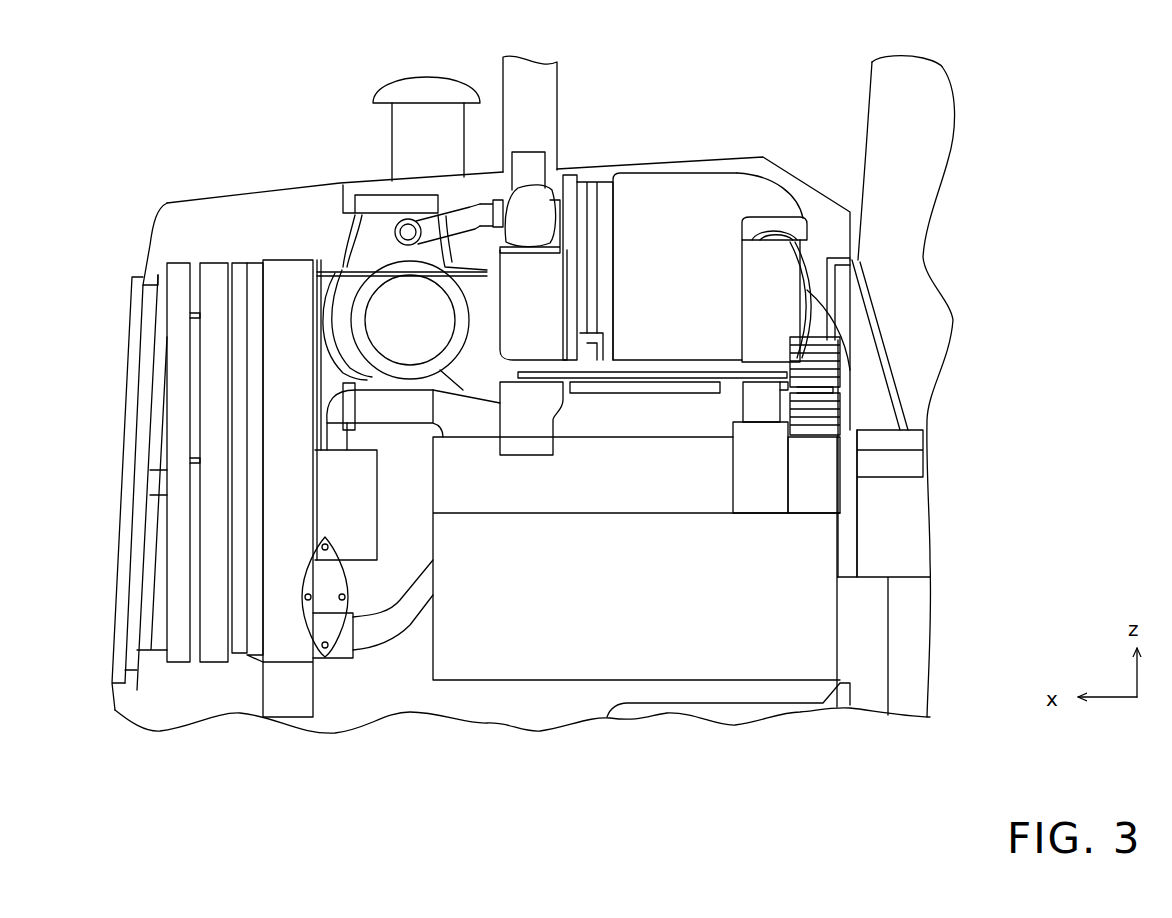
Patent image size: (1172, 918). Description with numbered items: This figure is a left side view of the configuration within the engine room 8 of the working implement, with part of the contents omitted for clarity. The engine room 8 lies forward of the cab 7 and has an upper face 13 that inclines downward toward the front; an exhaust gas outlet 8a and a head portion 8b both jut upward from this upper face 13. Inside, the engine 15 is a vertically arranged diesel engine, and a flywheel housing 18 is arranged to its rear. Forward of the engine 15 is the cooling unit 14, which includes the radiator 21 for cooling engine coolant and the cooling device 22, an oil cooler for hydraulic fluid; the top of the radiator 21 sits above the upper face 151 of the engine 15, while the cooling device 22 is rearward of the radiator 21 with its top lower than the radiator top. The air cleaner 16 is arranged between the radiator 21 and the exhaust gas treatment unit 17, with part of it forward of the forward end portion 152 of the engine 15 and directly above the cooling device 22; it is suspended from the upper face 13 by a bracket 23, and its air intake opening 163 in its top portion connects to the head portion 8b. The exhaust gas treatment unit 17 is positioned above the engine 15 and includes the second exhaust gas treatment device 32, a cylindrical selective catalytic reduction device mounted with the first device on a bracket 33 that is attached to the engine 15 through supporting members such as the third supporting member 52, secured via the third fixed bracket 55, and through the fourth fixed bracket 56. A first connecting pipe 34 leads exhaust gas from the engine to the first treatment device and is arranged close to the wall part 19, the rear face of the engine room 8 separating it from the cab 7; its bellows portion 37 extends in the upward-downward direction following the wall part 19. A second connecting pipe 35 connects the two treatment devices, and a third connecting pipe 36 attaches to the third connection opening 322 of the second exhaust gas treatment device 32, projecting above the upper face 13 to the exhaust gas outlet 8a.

The cab 7 is at (932, 130).
The engine room 8 is at (705, 130).
The exhaust gas outlet 8a is at (557, 93).
The head portion 8b is at (390, 135).
The upper face 13 is at (665, 157).
The cooling unit 14 is at (290, 250).
The engine 15 is at (660, 620).
The air cleaner 16 is at (400, 303).
The exhaust gas treatment unit 17 is at (728, 170).
The flywheel housing 18 is at (873, 633).
The wall part 19 is at (862, 353).
The radiator 21 is at (277, 368).
The cooling device 22 is at (350, 500).
The bracket 23 is at (340, 238).
The second exhaust gas treatment device 32 is at (645, 233).
The bracket 33 is at (762, 365).
The first connecting pipe 34 is at (903, 430).
The second connecting pipe 35 is at (767, 193).
The third connecting pipe 36 is at (530, 160).
The bellows portion 37 is at (830, 373).
The third supporting member 52 is at (752, 402).
The third fixed bracket 55 is at (767, 493).
The fourth fixed bracket 56 is at (523, 425).
The upper face 151 is at (627, 437).
The forward end portion 152 is at (428, 486).
The air intake opening 163 is at (420, 197).
The third connection opening 322 is at (560, 213).